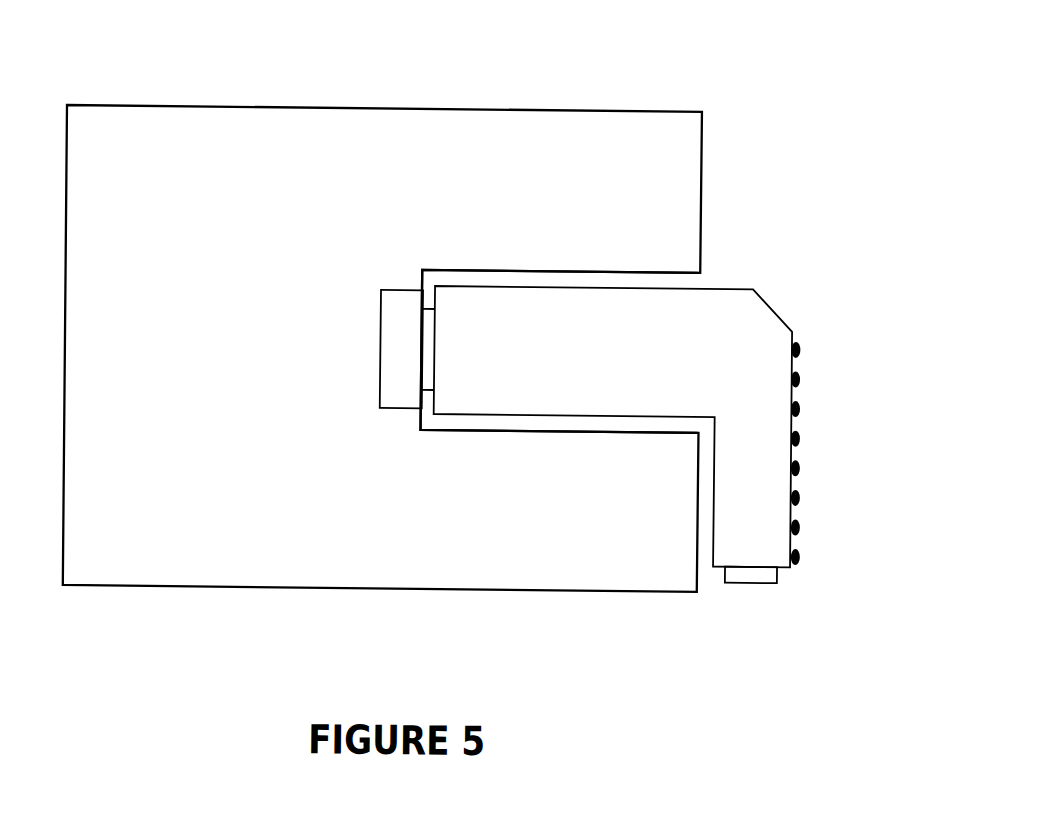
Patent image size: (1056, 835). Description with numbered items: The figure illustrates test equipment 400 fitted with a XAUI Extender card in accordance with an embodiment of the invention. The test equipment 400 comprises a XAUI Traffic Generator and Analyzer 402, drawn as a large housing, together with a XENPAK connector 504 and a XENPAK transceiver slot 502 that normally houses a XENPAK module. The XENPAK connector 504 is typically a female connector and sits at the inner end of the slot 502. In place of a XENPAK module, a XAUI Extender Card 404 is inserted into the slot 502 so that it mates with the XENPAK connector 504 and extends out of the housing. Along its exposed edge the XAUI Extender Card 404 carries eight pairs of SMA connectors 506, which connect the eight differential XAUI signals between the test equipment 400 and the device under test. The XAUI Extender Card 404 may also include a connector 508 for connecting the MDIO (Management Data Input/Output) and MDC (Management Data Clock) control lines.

The test equipment 400 is at (335, 85).
The XAUI Traffic Generator and Analyzer 402 is at (223, 251).
The XAUI Extender Card 404 is at (588, 386).
The XENPAK transceiver slot 502 is at (502, 426).
The XENPAK connector 504 is at (384, 326).
The SMA connectors 506 is at (804, 335).
The connector 508 is at (760, 576).